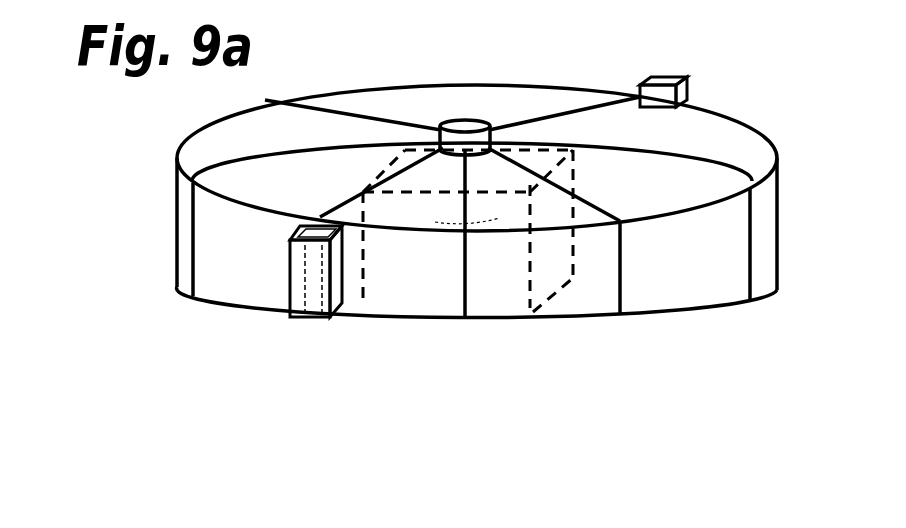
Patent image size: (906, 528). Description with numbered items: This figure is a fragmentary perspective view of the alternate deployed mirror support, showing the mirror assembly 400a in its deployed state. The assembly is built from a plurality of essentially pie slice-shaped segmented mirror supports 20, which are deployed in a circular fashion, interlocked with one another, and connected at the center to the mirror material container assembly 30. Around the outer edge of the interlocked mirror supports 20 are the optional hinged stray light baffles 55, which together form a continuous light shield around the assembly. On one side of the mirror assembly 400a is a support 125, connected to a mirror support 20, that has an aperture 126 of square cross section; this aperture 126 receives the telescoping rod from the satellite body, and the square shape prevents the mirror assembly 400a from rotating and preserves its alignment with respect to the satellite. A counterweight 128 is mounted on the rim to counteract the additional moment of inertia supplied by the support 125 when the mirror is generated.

The mirror assembly 400a is at (168, 188).
The segmented mirror support 20 is at (405, 112).
The mirror material container assembly 30 is at (463, 117).
The hinged stray light baffle 55 is at (471, 250).
The support 125 is at (300, 290).
The aperture 126 is at (317, 305).
The counterweight 128 is at (680, 82).